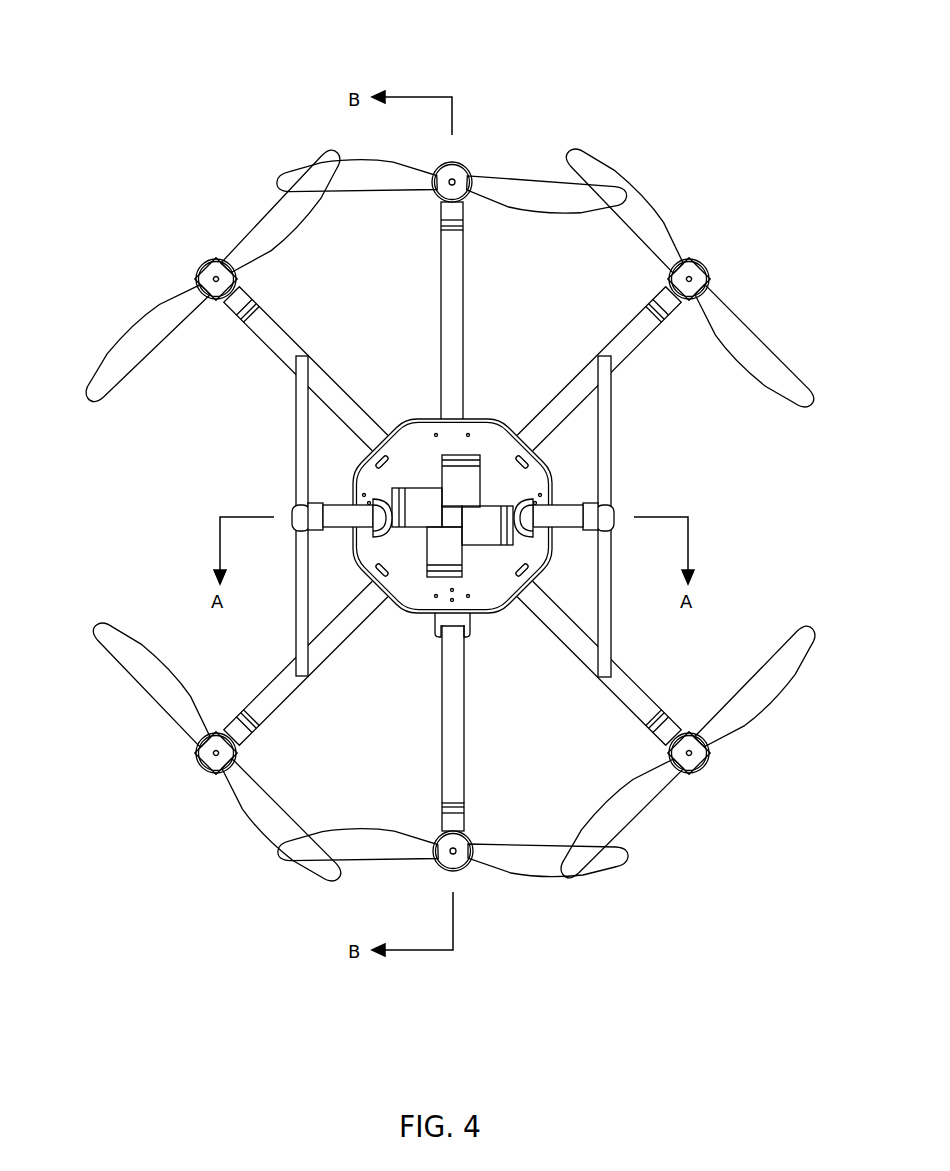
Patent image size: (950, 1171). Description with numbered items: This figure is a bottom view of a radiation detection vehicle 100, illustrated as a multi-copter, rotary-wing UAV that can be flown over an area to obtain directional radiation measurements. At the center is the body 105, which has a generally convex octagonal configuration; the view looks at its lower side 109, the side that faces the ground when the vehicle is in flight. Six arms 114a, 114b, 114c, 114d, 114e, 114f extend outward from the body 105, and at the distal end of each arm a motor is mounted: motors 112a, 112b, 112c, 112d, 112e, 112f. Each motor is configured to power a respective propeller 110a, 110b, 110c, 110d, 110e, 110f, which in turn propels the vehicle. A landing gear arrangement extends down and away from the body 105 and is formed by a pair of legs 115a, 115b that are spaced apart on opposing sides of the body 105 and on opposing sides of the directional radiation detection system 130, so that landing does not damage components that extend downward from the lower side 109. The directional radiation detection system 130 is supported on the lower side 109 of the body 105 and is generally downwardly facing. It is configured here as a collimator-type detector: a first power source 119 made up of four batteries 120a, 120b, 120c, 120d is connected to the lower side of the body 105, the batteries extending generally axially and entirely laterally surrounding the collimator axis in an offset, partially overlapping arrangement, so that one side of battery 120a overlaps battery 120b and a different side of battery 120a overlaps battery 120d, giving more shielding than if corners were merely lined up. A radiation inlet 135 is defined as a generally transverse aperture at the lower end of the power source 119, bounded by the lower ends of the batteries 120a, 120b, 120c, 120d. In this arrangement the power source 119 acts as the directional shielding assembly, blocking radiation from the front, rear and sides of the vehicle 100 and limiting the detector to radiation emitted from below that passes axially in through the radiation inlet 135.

The radiation detection vehicle 100 is at (452, 484).
The body 105 is at (425, 440).
The lower side 109 is at (485, 582).
The propeller 110a is at (505, 183).
The propeller 110b is at (738, 330).
The propeller 110c is at (755, 700).
The propeller 110d is at (523, 855).
The propeller 110e is at (162, 697).
The propeller 110f is at (150, 337).
The motor 112a is at (459, 174).
The motor 112b is at (696, 273).
The motor 112c is at (702, 757).
The motor 112d is at (463, 870).
The motor 112e is at (203, 763).
The motor 112f is at (206, 272).
The arm 114a is at (453, 320).
The arm 114b is at (633, 338).
The arm 114c is at (632, 697).
The arm 114d is at (450, 785).
The arm 114e is at (272, 700).
The arm 114f is at (267, 327).
The leg 115a is at (303, 475).
The leg 115b is at (605, 470).
The first power source 119 is at (382, 496).
The battery 120a is at (467, 473).
The battery 120b is at (478, 530).
The battery 120c is at (437, 558).
The battery 120d is at (423, 498).
The directional radiation detection system 130 is at (502, 493).
The radiation inlet 135 is at (447, 518).